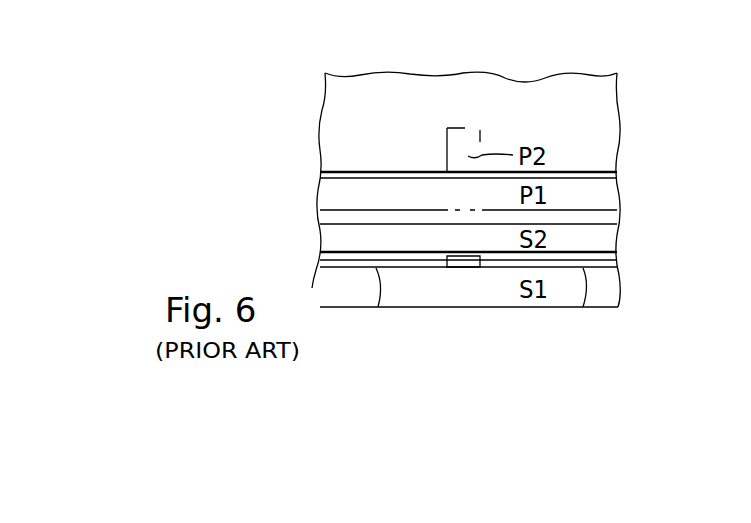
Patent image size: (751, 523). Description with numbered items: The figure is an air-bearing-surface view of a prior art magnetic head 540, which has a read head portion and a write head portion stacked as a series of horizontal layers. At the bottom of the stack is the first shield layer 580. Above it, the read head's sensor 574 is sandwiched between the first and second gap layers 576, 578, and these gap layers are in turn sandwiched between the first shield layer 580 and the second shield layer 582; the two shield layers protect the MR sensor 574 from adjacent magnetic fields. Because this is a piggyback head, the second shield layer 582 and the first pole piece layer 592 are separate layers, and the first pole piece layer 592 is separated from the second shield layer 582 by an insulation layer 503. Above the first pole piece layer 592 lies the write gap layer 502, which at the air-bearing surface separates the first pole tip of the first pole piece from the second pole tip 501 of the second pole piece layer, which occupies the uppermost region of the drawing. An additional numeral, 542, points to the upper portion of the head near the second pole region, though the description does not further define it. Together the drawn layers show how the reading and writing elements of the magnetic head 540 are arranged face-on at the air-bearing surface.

The second pole tip 501 is at (462, 137).
The write gap layer 502 is at (388, 172).
The insulation layer 503 is at (612, 221).
The magnetic head 540 is at (637, 90).
The second pole layer P2 542 is at (325, 103).
The sensor 574 is at (462, 268).
The first gap layer 576 is at (376, 307).
The second gap layer 578 is at (583, 307).
The first shield layer 580 is at (612, 292).
The second shield layer 582 is at (326, 242).
The first pole piece layer 592 is at (326, 190).